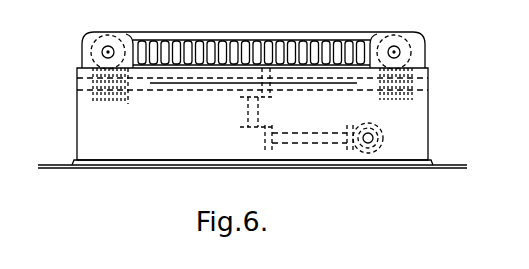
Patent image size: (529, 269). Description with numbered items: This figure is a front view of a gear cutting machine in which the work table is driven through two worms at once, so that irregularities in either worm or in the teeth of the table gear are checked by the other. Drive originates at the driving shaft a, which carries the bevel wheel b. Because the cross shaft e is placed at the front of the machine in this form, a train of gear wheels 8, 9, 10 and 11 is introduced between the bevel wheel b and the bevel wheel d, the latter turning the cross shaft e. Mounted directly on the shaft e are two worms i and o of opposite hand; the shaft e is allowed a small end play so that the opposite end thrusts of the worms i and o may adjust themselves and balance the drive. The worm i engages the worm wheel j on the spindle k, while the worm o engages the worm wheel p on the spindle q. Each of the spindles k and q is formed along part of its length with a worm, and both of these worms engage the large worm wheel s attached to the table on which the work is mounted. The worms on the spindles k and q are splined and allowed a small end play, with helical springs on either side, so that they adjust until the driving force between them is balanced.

The spindle k is at (108, 50).
The worm wheel j is at (91, 53).
The worm wheel s is at (191, 38).
The spindle q is at (394, 50).
The worm wheel p is at (413, 50).
The worm i is at (110, 100).
The worm o is at (396, 102).
The cross shaft e is at (198, 92).
The bevel wheel d is at (267, 95).
The gear wheel 8 is at (241, 100).
The gear wheel 9 is at (257, 132).
The driving shaft a is at (381, 146).
The gear wheel 10 is at (279, 163).
The gear wheel 11 is at (349, 161).
The bevel wheel b is at (383, 166).